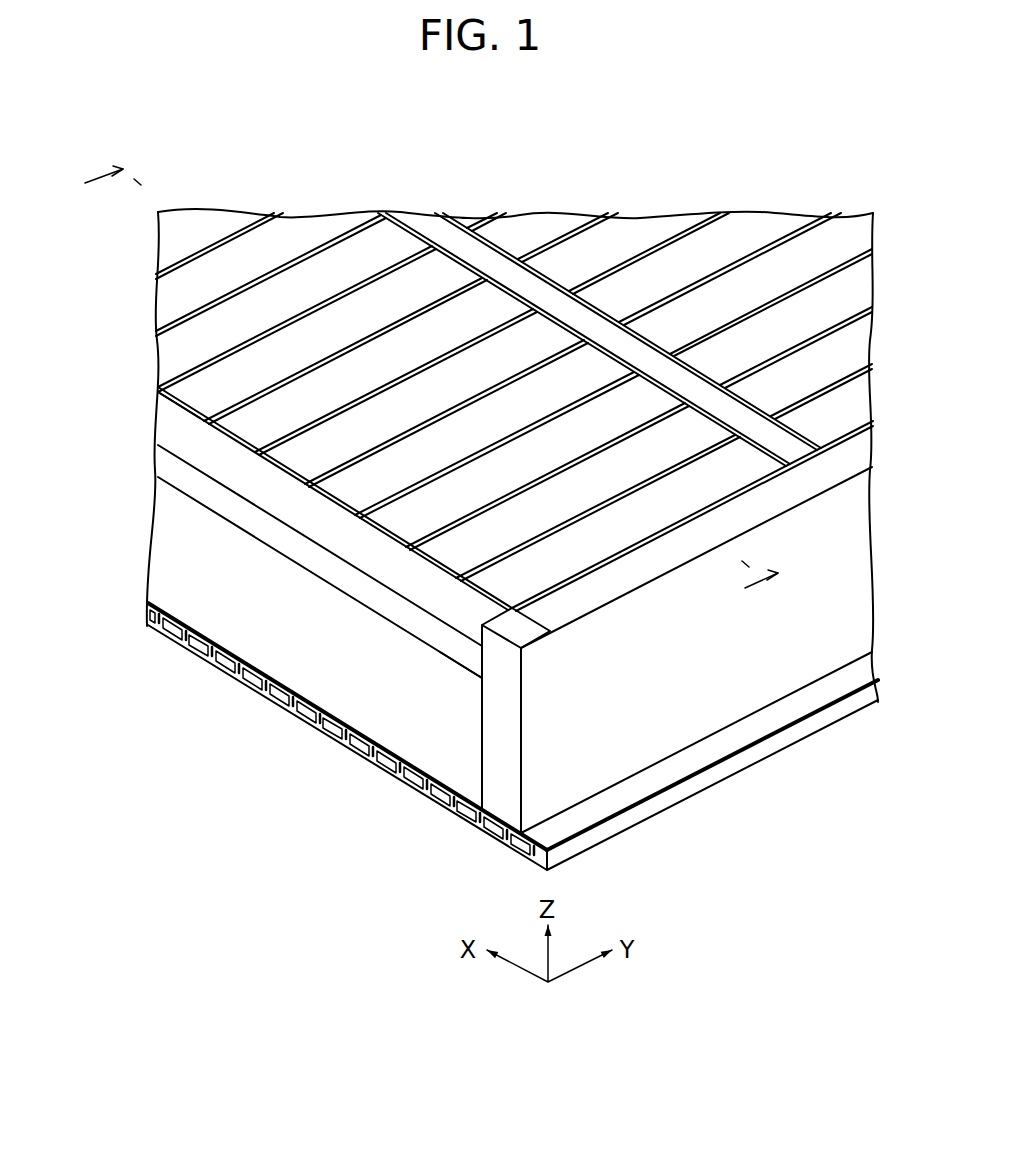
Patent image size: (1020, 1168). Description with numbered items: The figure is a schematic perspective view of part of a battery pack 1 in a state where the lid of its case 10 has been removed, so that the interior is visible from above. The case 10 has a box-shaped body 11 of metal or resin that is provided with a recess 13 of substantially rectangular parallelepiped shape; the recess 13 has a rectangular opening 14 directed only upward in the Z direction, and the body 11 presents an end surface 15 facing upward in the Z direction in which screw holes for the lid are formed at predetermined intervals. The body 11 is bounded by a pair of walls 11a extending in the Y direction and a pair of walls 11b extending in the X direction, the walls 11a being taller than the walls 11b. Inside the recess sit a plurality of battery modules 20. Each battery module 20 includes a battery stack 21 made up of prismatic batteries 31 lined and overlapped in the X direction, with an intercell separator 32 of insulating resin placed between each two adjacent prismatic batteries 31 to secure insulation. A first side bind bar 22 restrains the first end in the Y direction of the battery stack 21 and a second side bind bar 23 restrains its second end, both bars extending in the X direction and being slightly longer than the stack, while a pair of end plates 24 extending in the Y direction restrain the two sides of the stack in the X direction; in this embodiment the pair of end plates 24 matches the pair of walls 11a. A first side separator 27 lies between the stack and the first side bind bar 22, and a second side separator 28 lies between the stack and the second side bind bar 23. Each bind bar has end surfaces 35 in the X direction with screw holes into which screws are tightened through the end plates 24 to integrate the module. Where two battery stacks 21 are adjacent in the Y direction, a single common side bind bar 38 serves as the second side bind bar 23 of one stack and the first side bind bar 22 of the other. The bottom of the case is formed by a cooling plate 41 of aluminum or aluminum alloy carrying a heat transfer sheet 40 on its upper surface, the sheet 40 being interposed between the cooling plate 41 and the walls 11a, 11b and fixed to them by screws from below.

The battery pack 1 is at (604, 165).
The case 10 is at (353, 680).
The body 11 is at (267, 640).
The walls 11a is at (750, 508).
The walls 11b is at (337, 575).
The recess 13 is at (193, 462).
The opening 14 is at (237, 492).
The end surface 15 is at (420, 627).
The battery module 20 is at (420, 336).
The battery stack 21 is at (240, 370).
The first side bind bar 22 is at (268, 488).
The second side bind bar 23 is at (487, 262).
The end plate 24 is at (722, 687).
The first side separator 27 is at (190, 407).
The second side separator 28 is at (405, 228).
The prismatic battery 31 is at (587, 367).
The intercell separator 32 is at (305, 307).
The end surface 35 is at (483, 720).
The common side bind bar 38 is at (700, 397).
The heat transfer sheet 40 is at (657, 800).
The cooling plate 41 is at (607, 835).